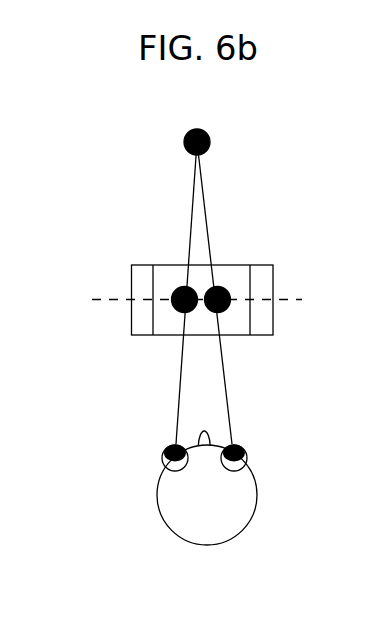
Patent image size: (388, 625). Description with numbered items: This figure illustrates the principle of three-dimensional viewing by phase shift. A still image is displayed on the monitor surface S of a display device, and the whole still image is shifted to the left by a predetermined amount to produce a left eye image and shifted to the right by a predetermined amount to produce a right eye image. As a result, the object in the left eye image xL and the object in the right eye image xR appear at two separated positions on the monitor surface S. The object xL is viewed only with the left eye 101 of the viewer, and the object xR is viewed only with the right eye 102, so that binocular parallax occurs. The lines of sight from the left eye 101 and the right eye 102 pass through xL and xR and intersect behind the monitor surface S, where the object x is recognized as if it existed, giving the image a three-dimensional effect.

The object x is at (207, 132).
The monitor surface S is at (188, 300).
The object in the left eye image xL is at (180, 312).
The object in the right eye image xR is at (225, 312).
The left eye 101 is at (163, 456).
The right eye 102 is at (248, 451).